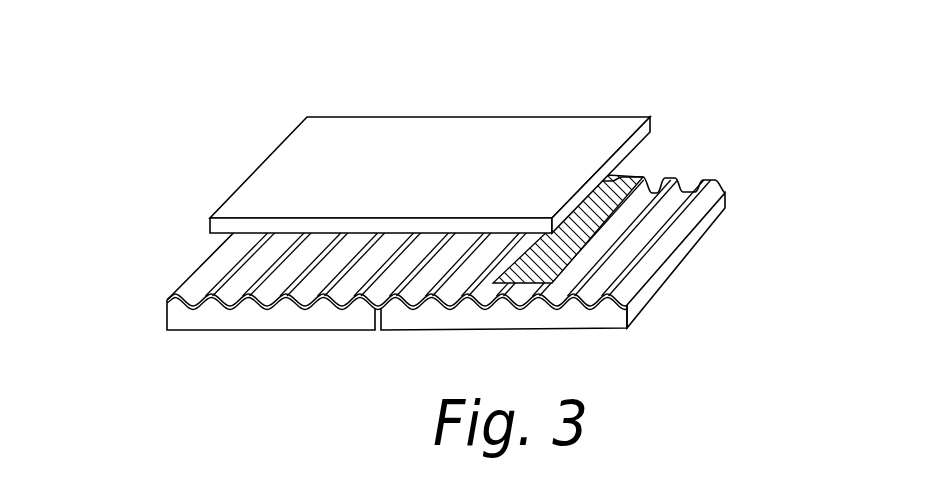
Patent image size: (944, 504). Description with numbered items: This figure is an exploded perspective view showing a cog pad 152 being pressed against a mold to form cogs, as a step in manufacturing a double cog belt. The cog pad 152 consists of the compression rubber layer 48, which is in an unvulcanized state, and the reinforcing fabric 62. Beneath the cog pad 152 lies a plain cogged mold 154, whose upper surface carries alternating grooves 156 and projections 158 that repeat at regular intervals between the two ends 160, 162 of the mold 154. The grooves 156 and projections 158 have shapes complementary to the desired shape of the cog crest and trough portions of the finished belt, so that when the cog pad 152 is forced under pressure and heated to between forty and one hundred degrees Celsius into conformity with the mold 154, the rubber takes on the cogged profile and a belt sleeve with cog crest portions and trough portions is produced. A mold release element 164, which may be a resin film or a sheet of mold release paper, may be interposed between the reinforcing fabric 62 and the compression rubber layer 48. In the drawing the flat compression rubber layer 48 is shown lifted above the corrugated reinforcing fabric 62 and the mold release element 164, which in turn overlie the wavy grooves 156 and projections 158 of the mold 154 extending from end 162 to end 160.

The compression rubber layer 48 is at (363, 155).
The cog pad 152 is at (190, 267).
The plain cogged mold 154 is at (428, 318).
The grooves 156 is at (688, 193).
The projections 158 is at (606, 301).
The end 160 is at (635, 305).
The end 162 is at (166, 316).
The mold release element 164 is at (613, 196).
The reinforcing fabric 62 is at (280, 284).